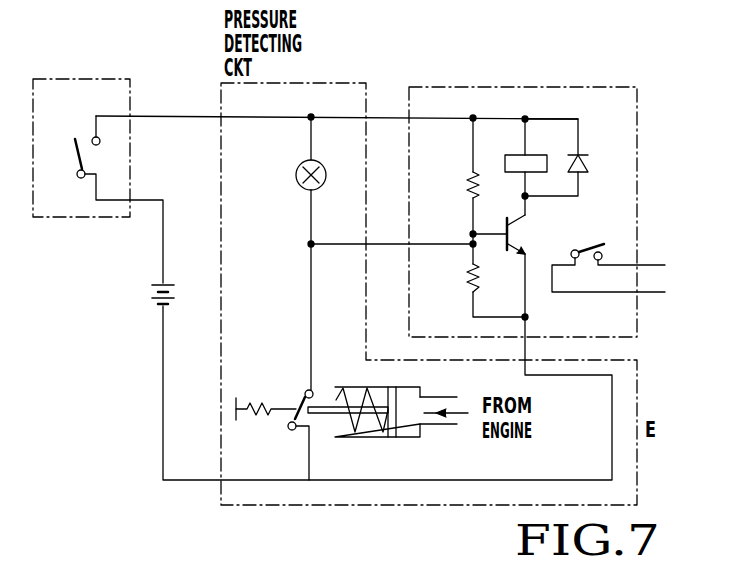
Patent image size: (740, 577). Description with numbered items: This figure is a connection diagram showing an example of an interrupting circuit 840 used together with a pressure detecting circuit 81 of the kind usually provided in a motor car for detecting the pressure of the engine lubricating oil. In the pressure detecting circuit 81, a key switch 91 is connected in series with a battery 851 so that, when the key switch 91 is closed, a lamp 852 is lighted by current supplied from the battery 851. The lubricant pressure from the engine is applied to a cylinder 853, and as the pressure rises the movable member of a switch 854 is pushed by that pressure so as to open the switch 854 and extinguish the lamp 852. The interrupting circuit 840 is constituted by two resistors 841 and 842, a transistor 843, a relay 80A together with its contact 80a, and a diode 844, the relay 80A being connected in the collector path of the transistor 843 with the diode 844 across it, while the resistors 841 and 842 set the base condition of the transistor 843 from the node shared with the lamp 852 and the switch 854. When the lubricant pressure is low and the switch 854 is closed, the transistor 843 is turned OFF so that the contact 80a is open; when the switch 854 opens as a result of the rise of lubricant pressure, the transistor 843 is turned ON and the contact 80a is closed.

The key switch 91 is at (98, 78).
The pressure detecting circuit 81 is at (340, 80).
The interrupting circuit 840 is at (567, 86).
The lamp 852 is at (326, 172).
The battery 851 is at (175, 290).
The resistor 841 is at (468, 183).
The resistor 842 is at (465, 279).
The transistor 843 is at (520, 233).
The relay 80A is at (505, 163).
The diode 844 is at (590, 158).
The contact 80a is at (592, 249).
The switch 854 is at (302, 390).
The cylinder 853 is at (422, 398).